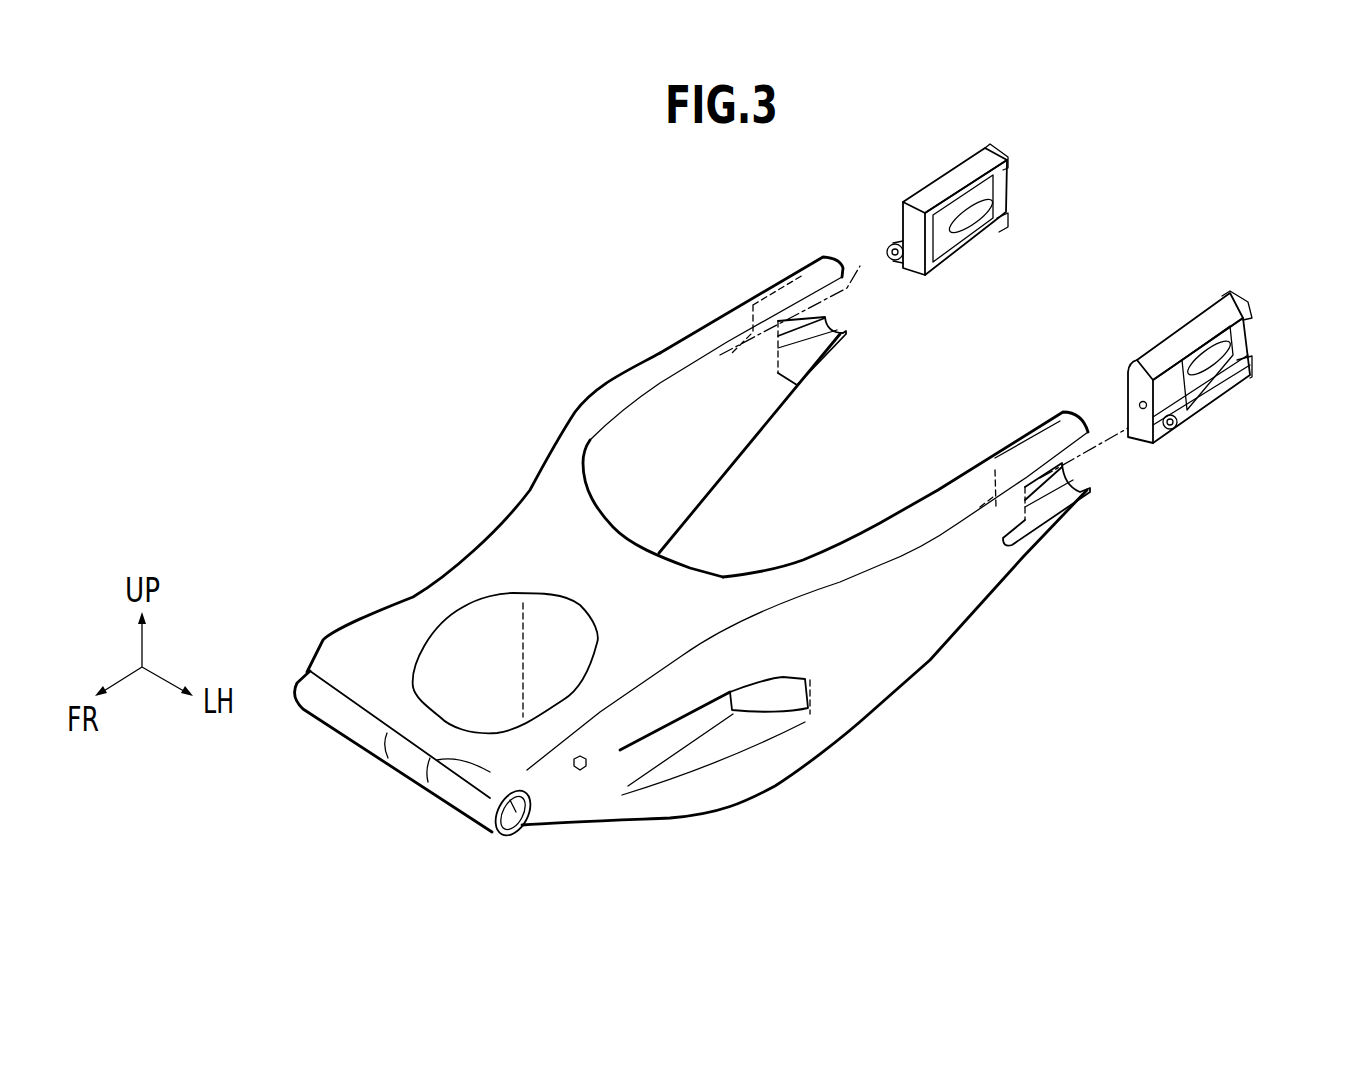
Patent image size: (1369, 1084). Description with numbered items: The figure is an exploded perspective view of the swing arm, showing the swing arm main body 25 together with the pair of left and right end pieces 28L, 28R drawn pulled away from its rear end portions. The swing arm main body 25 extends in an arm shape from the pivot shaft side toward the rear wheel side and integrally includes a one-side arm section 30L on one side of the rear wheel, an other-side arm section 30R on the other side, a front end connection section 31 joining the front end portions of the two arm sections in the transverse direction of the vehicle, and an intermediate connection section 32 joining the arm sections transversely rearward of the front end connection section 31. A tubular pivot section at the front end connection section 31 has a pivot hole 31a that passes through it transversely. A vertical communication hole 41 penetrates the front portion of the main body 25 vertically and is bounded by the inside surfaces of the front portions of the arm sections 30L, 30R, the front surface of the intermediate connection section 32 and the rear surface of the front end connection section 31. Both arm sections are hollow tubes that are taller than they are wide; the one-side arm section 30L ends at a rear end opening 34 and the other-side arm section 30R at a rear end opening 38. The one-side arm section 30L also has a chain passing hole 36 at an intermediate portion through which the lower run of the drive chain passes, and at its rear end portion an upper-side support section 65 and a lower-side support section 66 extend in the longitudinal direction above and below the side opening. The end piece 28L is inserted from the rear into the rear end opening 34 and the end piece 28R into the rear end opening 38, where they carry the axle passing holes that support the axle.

The swing arm main body 25 is at (878, 722).
The end piece 28R is at (1012, 185).
The end piece 28L is at (1255, 348).
The other-side arm section 30R is at (632, 358).
The one-side arm section 30L is at (976, 634).
The front end connection section 31 is at (447, 705).
The pivot hole 31a is at (518, 835).
The intermediate connection section 32 is at (597, 577).
The rear end opening 34 is at (1090, 473).
The chain passing hole 36 is at (783, 697).
The rear end opening 38 is at (852, 305).
The vertical communication hole 41 is at (507, 640).
The upper-side support section 65 is at (795, 278).
The lower-side support section 66 is at (820, 358).